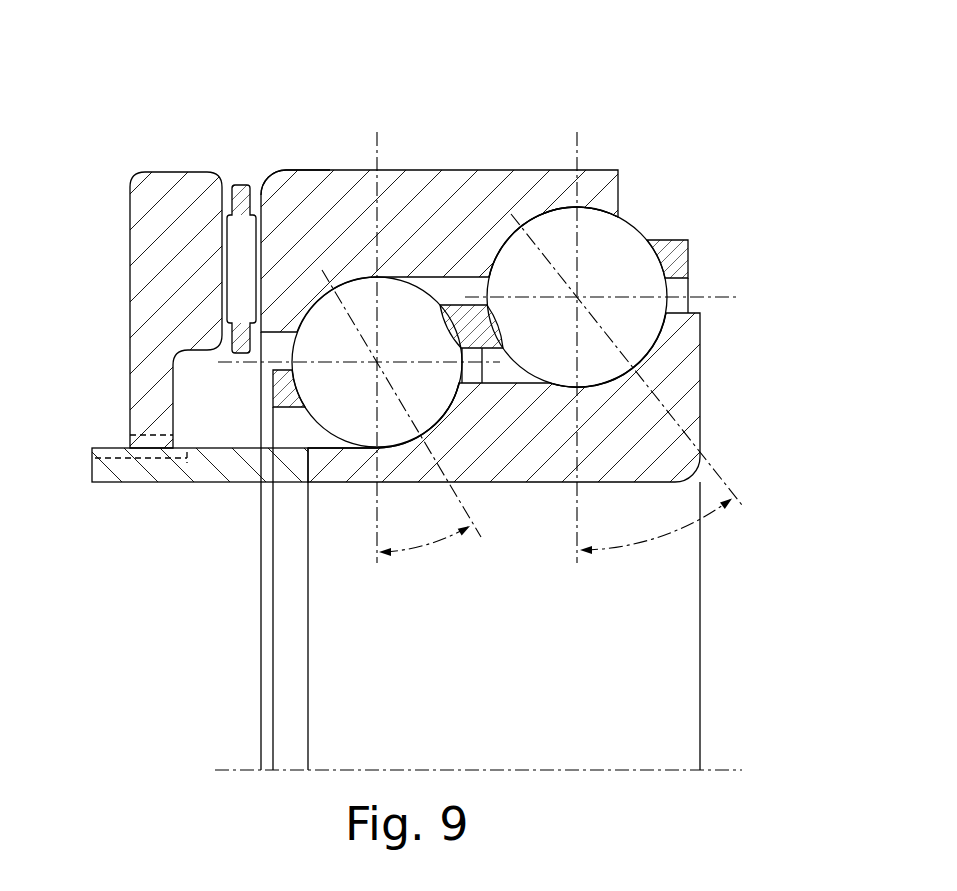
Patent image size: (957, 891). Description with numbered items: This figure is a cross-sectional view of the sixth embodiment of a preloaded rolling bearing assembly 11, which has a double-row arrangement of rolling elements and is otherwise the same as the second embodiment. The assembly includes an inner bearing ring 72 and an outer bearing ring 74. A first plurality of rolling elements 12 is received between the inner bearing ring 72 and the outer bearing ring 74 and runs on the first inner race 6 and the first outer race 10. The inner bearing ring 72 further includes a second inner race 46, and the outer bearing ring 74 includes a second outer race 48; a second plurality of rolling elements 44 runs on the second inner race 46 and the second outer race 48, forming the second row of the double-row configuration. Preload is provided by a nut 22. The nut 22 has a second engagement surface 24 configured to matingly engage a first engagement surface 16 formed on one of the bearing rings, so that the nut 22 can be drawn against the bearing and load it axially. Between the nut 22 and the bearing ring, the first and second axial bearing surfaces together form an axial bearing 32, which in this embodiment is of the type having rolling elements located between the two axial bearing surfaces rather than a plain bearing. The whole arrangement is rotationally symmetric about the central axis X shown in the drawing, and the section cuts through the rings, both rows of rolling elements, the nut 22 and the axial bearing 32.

The first inner race 6 is at (372, 452).
The first outer race 10 is at (367, 277).
The rolling bearing assembly 11 is at (285, 158).
The first plurality of rolling elements 12 is at (322, 402).
The first engagement surface 16 is at (92, 448).
The nut 22 is at (145, 172).
The second engagement surface 24 is at (128, 437).
The axial bearing 32 is at (240, 185).
The second plurality of rolling elements 44 is at (615, 250).
The second inner race 46 is at (613, 385).
The second outer race 48 is at (547, 207).
The inner bearing ring 72 is at (682, 351).
The outer bearing ring 74 is at (480, 190).
The axis of rotation X is at (718, 770).